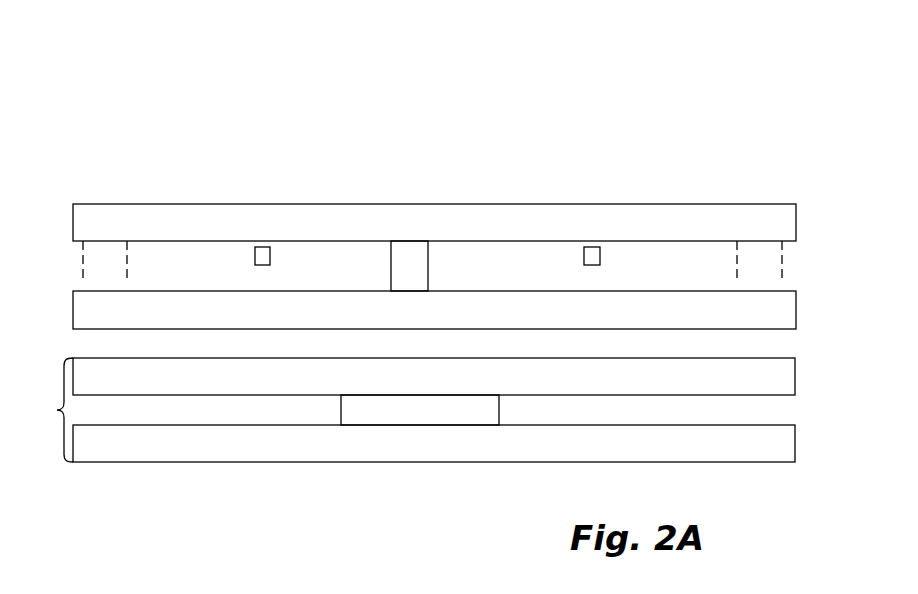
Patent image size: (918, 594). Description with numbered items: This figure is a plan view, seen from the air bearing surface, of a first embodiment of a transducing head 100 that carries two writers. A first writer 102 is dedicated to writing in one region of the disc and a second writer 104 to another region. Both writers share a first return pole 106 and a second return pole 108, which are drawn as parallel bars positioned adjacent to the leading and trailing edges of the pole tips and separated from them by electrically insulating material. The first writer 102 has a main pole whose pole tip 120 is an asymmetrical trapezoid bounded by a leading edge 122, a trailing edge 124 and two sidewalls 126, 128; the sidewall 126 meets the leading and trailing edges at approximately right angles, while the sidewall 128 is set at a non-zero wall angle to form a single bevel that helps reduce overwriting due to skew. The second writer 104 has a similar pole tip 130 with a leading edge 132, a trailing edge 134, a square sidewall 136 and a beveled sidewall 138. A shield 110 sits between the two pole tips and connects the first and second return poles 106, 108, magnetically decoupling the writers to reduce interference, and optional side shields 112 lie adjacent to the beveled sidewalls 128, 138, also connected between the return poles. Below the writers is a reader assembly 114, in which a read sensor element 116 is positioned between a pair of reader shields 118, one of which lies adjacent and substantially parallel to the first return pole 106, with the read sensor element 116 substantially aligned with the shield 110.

The transducing head 100 is at (566, 79).
The first writer 102 is at (258, 197).
The second writer 104 is at (586, 203).
The first return pole 106 is at (776, 319).
The second return pole 108 is at (777, 228).
The shield 110 is at (406, 250).
The side shields 112 is at (101, 268).
The reader assembly 114 is at (47, 410).
The read sensor element 116 is at (398, 418).
The reader shields 118 is at (770, 380).
The pole tip 120 is at (262, 247).
The leading edge 122 is at (266, 265).
The trailing edge 124 is at (256, 247).
The sidewall 126 is at (271, 252).
The sidewall 128 is at (256, 259).
The pole tip 130 is at (583, 252).
The leading edge 132 is at (600, 261).
The trailing edge 134 is at (593, 248).
The sidewall 136 is at (586, 265).
The sidewall 138 is at (600, 258).